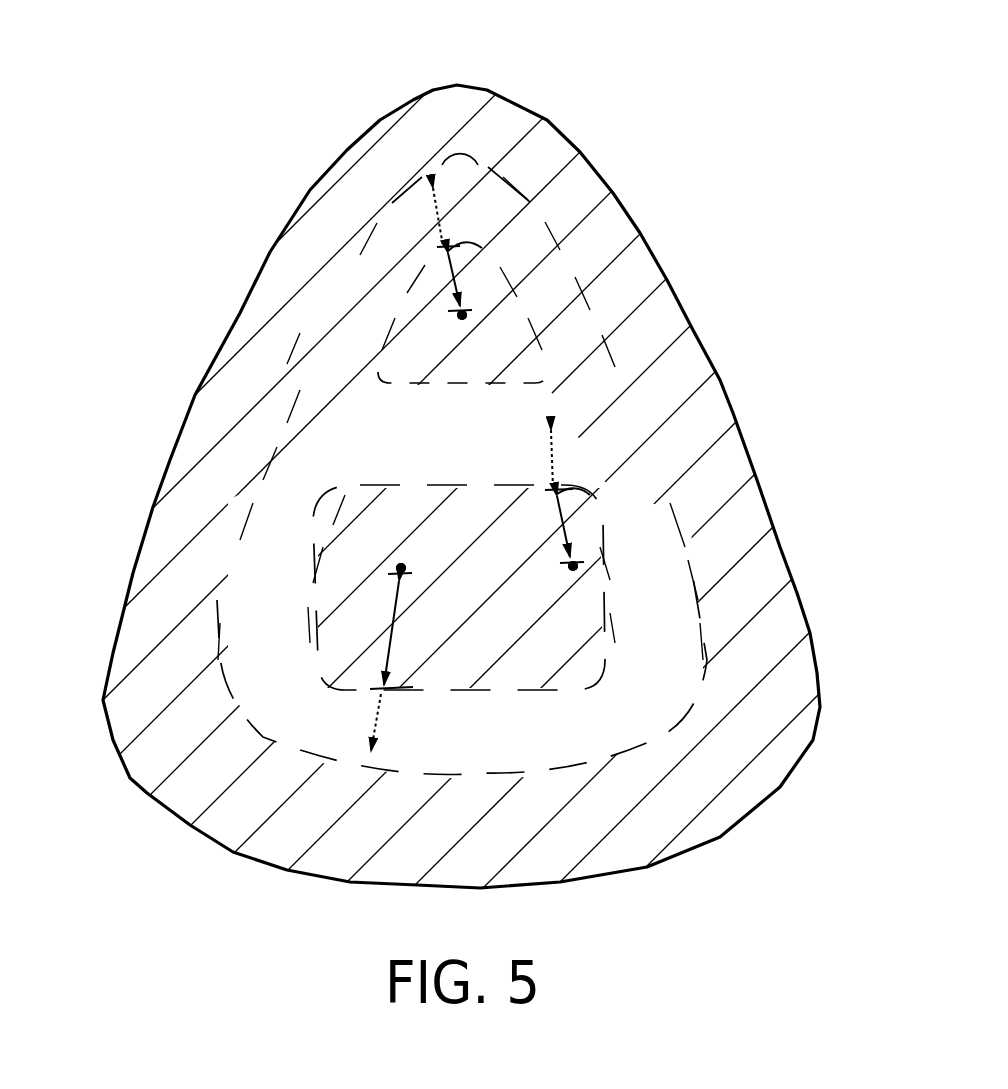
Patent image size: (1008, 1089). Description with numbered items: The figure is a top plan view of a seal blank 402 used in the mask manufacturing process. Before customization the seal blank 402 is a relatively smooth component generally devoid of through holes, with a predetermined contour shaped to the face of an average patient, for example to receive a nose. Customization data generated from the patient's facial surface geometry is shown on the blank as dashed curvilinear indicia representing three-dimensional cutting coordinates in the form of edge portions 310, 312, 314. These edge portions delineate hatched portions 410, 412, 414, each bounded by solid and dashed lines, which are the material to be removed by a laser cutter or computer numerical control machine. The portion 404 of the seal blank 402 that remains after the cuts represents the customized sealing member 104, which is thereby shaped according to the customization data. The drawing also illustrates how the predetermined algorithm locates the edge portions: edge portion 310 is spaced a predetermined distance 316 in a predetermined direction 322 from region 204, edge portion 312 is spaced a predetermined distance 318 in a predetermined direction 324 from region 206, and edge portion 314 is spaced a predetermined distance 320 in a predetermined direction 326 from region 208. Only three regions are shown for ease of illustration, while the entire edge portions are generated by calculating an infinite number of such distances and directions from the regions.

The seal blank 402 is at (150, 81).
The predetermined direction 326 is at (440, 220).
The predetermined distance 320 is at (448, 250).
The region 208 is at (461, 314).
The edge portion 314 is at (495, 278).
The hatched portion 414 is at (483, 353).
The customized sealing member 104 is at (403, 426).
The portion of seal blank 404 is at (223, 463).
The region 206 is at (400, 567).
The predetermined distance 318 is at (384, 630).
The predetermined direction 324 is at (375, 713).
The predetermined direction 322 is at (560, 462).
The predetermined distance 316 is at (560, 525).
The region 204 is at (574, 566).
The hatched portion 412 is at (517, 620).
The edge portion 312 is at (577, 685).
The edge portion 310 is at (510, 773).
The hatched portion 410 is at (583, 815).